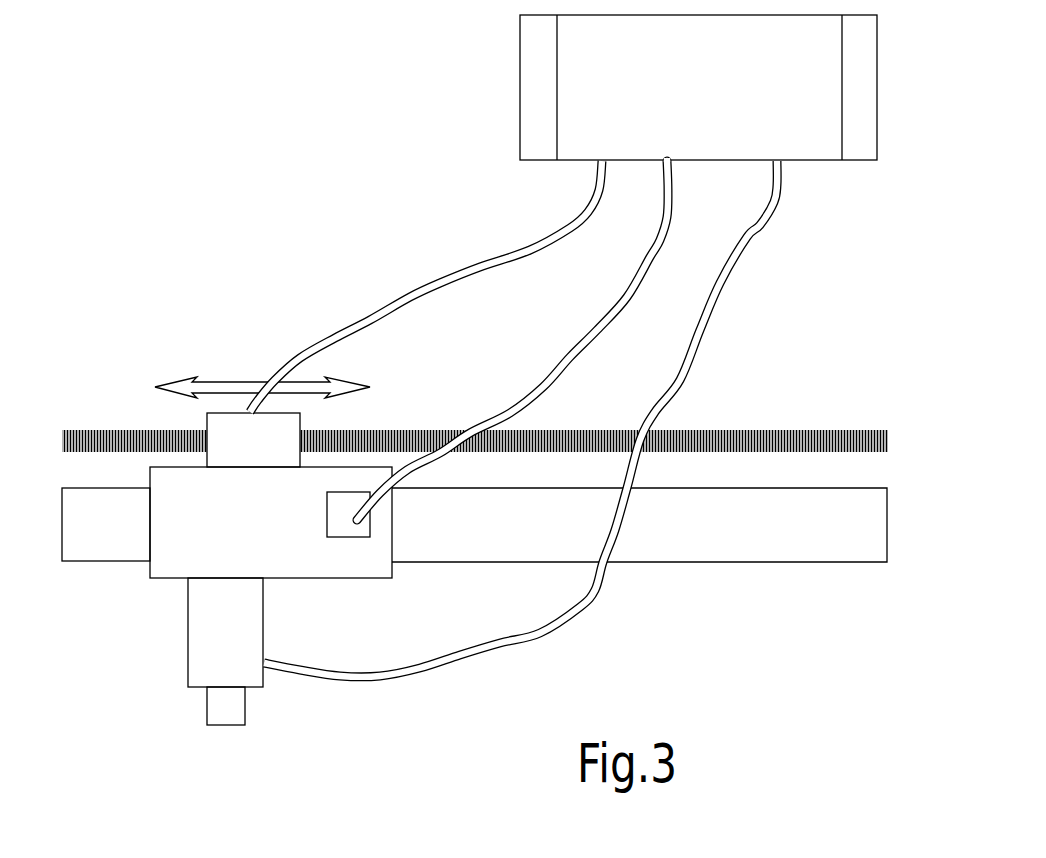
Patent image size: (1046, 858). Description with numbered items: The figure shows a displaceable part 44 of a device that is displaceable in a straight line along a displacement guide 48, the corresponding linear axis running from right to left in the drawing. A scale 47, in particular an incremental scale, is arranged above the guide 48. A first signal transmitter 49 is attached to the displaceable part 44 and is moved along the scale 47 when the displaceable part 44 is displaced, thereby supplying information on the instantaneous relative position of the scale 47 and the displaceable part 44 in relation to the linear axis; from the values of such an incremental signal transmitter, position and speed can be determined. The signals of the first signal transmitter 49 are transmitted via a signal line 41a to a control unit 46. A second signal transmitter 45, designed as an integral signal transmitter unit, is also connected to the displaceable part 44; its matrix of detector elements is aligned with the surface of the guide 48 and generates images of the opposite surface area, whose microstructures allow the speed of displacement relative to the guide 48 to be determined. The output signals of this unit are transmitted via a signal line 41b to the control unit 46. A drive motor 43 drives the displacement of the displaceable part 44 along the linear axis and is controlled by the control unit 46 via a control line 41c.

The signal line 41a is at (482, 266).
The signal line 41b is at (573, 347).
The control line 41c is at (695, 347).
The drive motor 43 is at (188, 685).
The displaceable part 44 is at (172, 578).
The second signal transmitter 45 is at (360, 530).
The control unit 46 is at (708, 118).
The scale 47 is at (860, 433).
The displacement guide 48 is at (888, 532).
The first signal transmitter 49 is at (207, 422).